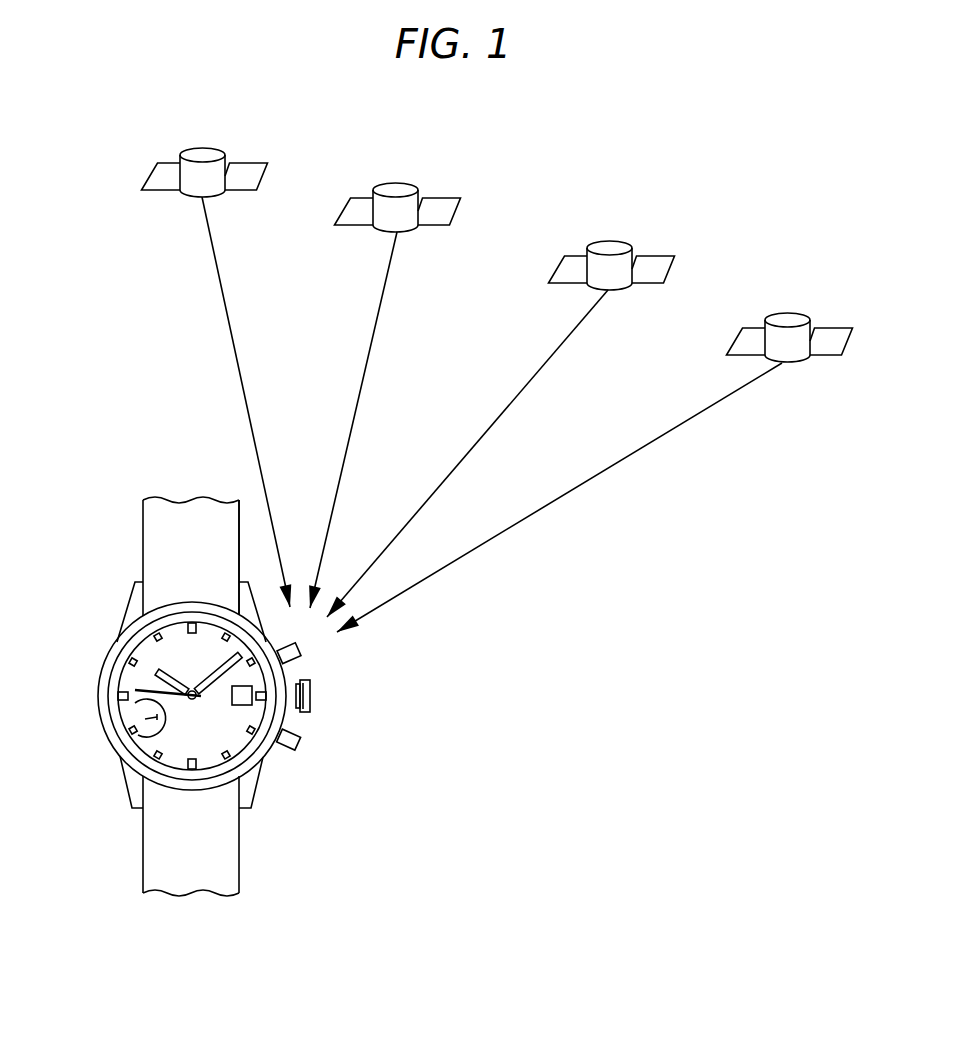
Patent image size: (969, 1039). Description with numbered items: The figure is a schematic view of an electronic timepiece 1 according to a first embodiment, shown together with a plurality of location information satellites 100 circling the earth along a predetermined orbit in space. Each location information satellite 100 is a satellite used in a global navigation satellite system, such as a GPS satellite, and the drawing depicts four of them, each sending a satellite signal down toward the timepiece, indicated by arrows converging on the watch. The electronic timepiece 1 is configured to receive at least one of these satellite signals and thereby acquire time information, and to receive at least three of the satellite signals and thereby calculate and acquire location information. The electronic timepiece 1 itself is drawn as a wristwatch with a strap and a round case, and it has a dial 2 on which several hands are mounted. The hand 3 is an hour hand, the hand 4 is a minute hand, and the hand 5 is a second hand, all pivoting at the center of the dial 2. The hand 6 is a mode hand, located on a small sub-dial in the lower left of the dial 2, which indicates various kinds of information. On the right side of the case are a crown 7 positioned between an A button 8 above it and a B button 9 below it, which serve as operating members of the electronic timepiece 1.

The electronic timepiece 1 is at (98, 568).
The dial 2 is at (230, 738).
The hour hand 3 is at (170, 660).
The minute hand 4 is at (208, 668).
The second hand 5 is at (150, 684).
The mode hand 6 is at (148, 727).
The crown 7 is at (312, 694).
The A button 8 is at (303, 647).
The B button 9 is at (300, 748).
The location information satellite 100 is at (247, 168).